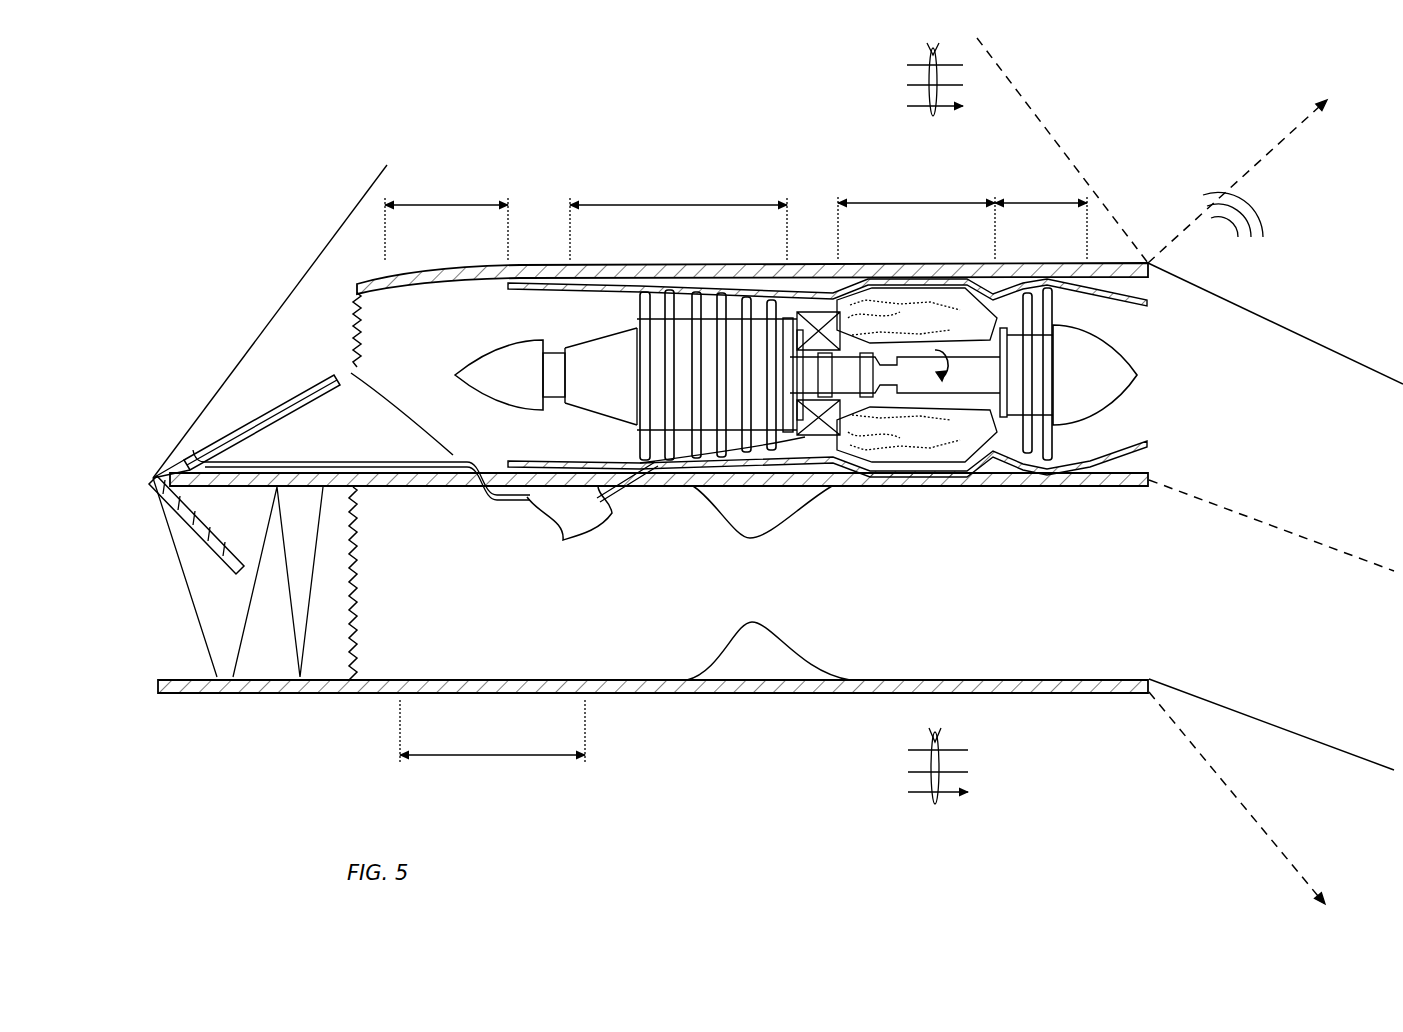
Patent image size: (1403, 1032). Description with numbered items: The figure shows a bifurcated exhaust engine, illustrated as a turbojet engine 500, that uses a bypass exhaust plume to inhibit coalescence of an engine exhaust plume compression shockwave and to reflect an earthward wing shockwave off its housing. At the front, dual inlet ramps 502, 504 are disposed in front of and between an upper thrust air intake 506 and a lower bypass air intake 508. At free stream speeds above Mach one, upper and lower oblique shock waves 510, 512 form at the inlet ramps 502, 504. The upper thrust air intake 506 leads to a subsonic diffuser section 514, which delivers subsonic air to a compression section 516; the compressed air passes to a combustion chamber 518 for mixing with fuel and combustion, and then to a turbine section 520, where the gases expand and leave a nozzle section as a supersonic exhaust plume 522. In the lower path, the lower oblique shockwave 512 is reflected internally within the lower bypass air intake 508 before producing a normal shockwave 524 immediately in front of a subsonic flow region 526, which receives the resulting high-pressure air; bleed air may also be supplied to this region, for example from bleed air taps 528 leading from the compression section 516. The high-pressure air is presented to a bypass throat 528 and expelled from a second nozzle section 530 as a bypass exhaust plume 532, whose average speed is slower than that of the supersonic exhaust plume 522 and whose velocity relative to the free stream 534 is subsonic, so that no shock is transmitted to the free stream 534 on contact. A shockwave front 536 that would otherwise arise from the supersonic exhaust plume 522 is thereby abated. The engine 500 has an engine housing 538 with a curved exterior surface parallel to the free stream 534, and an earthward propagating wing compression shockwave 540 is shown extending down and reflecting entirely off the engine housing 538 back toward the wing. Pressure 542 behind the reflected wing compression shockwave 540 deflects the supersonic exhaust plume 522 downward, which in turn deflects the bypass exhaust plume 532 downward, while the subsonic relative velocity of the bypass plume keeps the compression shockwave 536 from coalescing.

The turbojet engine 500 is at (287, 165).
The upper inlet ramp 502 is at (250, 418).
The lower inlet ramp 504 is at (203, 537).
The upper thrust air intake 506 is at (357, 287).
The lower bypass air intake 508 is at (165, 697).
The upper oblique shock wave 510 is at (260, 332).
The lower oblique shockwave 512 is at (190, 612).
The subsonic diffuser section 514 is at (445, 203).
The compression section 516 is at (683, 203).
The combustion chamber 518 is at (923, 202).
The turbine section 520 is at (1028, 202).
The supersonic exhaust plume 522 is at (1286, 426).
The normal shockwave 524 is at (363, 577).
The subsonic flow region 526 is at (497, 757).
The bypass throat 528 is at (563, 537).
The second nozzle section 530 is at (1130, 591).
The bypass exhaust plume 532 is at (1286, 639).
The free stream 534 is at (930, 50).
The shockwave front 536 is at (1232, 792).
The engine housing 538 is at (817, 262).
The earthward propagating wing compression shockwave 540 is at (1063, 153).
The pressure 542 is at (1240, 230).